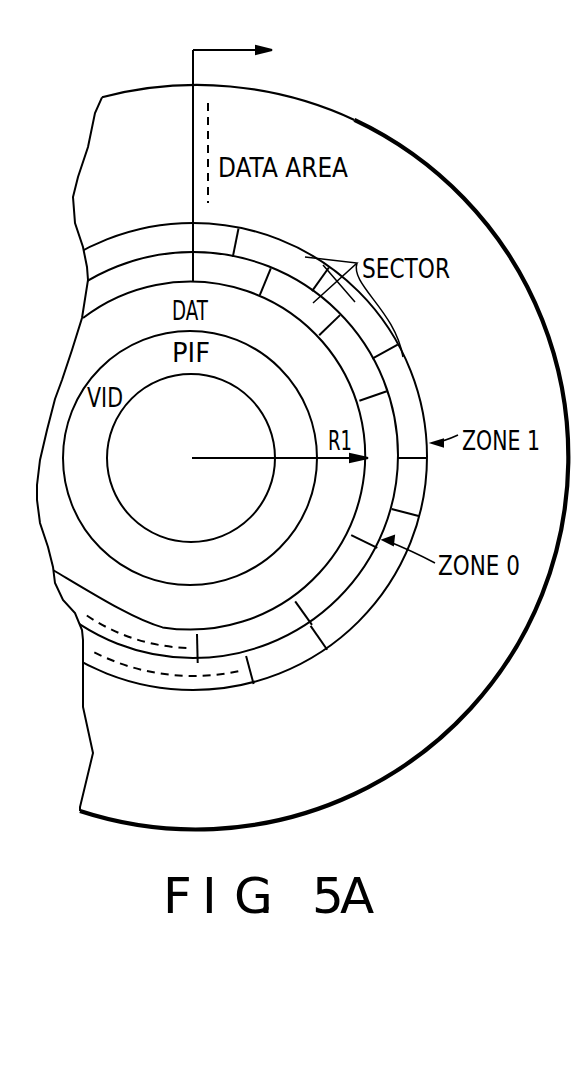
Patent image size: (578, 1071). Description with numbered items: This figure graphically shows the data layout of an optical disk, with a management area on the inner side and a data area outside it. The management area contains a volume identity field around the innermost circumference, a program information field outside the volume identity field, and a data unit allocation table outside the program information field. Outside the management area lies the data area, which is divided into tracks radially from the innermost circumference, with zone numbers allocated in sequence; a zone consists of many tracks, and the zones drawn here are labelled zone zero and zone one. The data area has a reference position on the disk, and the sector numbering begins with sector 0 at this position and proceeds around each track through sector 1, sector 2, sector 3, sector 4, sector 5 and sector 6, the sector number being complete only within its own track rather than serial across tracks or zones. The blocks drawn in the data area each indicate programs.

The sector 0 is at (245, 260).
The sector 1 is at (321, 296).
The sector 2 is at (378, 361).
The sector 3 is at (389, 487).
The sector 4 is at (357, 553).
The sector 5 is at (268, 638).
The sector 6 is at (258, 667).